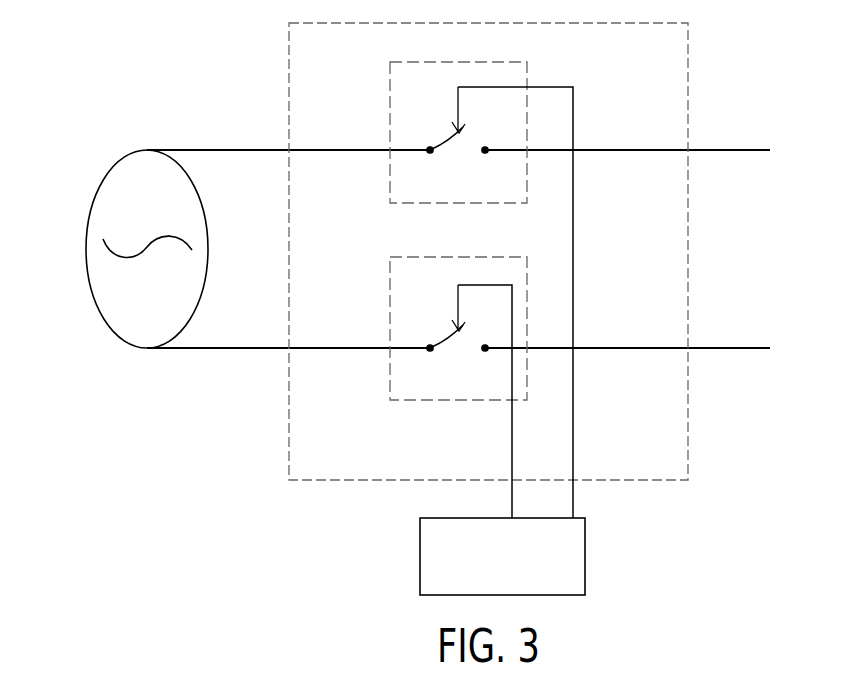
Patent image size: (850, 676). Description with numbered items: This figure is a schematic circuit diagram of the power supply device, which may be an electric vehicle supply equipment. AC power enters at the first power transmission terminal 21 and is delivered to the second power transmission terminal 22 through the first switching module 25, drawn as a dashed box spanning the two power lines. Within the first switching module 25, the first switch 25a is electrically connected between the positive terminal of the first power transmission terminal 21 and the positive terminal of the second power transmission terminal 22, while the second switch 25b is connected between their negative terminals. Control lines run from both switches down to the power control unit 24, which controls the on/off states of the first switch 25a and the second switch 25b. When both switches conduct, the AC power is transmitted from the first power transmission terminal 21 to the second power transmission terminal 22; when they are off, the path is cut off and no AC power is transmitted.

The first power transmission terminal 21 is at (289, 347).
The second power transmission terminal 22 is at (688, 347).
The power control unit 24 is at (420, 557).
The first switching module 25 is at (688, 70).
The first switch 25a is at (458, 62).
The second switch 25b is at (458, 257).